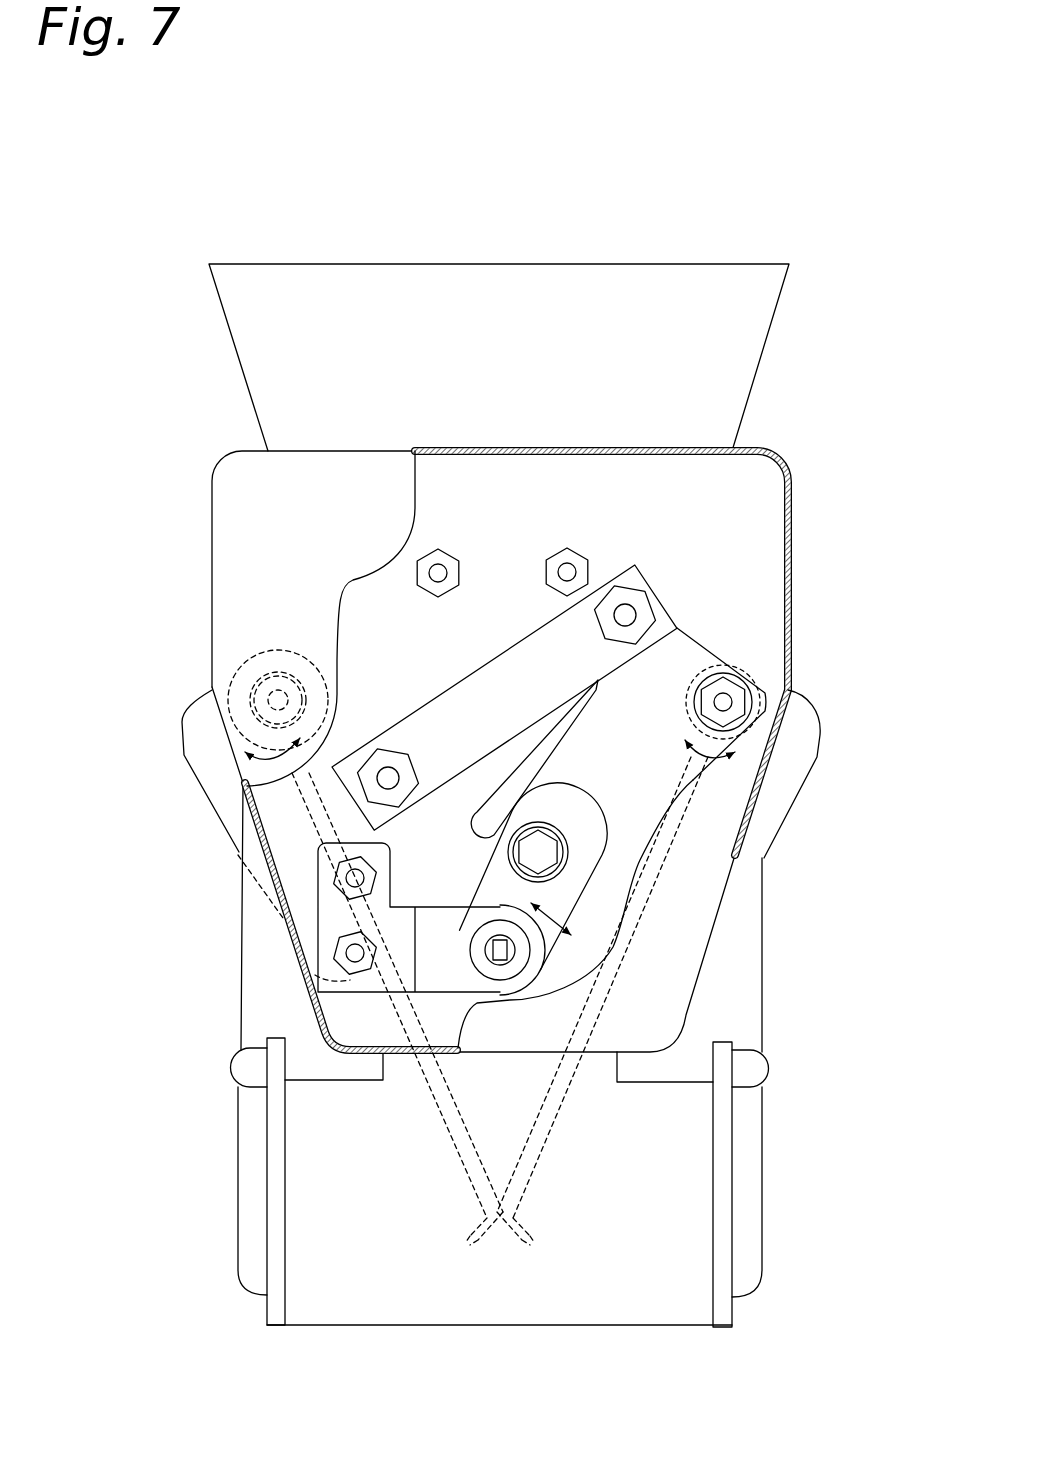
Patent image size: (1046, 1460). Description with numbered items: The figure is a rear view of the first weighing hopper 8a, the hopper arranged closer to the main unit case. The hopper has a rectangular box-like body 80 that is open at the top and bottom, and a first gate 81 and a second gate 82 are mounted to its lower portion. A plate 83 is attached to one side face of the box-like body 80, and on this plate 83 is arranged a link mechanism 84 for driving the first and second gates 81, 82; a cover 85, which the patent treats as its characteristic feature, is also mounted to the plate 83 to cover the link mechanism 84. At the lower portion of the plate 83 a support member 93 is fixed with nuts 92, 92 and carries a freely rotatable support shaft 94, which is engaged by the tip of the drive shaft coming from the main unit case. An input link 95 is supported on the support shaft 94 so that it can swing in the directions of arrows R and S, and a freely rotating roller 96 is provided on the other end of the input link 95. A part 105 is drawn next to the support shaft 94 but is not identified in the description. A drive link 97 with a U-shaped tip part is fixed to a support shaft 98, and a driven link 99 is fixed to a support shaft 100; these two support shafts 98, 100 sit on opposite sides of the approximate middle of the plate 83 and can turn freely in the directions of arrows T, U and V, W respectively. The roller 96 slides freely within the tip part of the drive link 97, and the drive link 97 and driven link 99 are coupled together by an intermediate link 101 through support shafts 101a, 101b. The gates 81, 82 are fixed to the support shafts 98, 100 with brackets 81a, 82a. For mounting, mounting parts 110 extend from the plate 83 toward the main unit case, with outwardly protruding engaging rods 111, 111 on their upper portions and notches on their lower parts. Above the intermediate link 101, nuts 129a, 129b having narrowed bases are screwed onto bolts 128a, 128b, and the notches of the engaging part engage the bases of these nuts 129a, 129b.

The first weighing hopper 8a is at (310, 240).
The box-like body 80 is at (668, 297).
The first gate 81 is at (535, 1180).
The bracket 81a is at (810, 762).
The second gate 82 is at (470, 1178).
The bracket 82a is at (190, 760).
The plate 83 is at (762, 502).
The link mechanism 84 is at (590, 527).
The cover 85 is at (448, 448).
The nuts 92 is at (340, 883).
The support member 93 is at (455, 983).
The support shaft 94 is at (513, 955).
The input link 95 is at (498, 886).
The roller 96 is at (497, 842).
The drive link 97 is at (687, 655).
The support shaft 98 is at (726, 700).
The driven link 99 is at (342, 722).
The support shaft 100 is at (265, 693).
The intermediate link 101 is at (499, 700).
The support shaft 101a is at (640, 600).
The support shaft 101b is at (398, 760).
The pin 105 is at (535, 952).
The mounting parts 110 is at (277, 1115).
The engaging rods 111 is at (248, 1067).
The bolt 128a is at (566, 568).
The bolt 128b is at (440, 570).
The nut 129a is at (585, 557).
The nut 129b is at (425, 557).